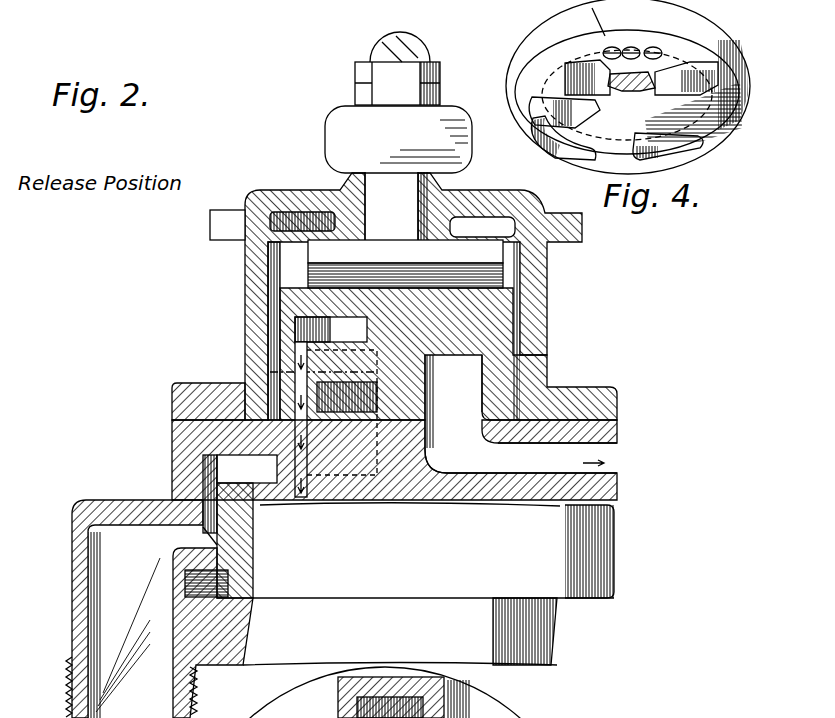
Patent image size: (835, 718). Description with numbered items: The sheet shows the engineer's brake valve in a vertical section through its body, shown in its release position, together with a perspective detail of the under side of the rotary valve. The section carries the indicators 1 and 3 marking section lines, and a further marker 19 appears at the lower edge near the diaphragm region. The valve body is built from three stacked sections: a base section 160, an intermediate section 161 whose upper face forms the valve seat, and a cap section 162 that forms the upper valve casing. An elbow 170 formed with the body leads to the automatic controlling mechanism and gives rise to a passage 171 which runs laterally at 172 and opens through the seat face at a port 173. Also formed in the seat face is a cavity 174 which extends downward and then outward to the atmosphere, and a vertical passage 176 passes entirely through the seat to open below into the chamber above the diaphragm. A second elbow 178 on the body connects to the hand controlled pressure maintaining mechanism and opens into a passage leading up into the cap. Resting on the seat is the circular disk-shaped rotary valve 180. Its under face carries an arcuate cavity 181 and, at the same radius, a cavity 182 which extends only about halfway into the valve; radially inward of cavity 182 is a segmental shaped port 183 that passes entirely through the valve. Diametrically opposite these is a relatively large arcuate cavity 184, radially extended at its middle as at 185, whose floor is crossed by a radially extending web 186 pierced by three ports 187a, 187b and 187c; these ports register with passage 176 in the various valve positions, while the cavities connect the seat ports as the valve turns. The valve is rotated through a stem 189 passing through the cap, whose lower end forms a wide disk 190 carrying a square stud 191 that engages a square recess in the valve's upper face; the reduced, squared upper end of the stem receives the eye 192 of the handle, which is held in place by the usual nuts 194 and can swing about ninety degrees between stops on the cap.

In FIG. 2, the section line 1- 1 is at (485, 700).
In FIG. 2, the section line 3- 3 is at (300, 352).
In FIG. 2, the diaphragm 19 is at (505, 717).
In FIG. 2, the base section 160 is at (614, 585).
In FIG. 2, the intermediate section 161 is at (617, 437).
In FIG. 2, the cap section 162 is at (543, 300).
In FIG. 2, the elbow 170 is at (159, 600).
In FIG. 2, the passage 171 is at (240, 494).
In FIG. 2, the lateral extension of passage 172 is at (333, 497).
In FIG. 2, the port 173 is at (427, 378).
In FIG. 2, the cavity 174 is at (546, 450).
In FIG. 2, the vertical passage 176 is at (280, 372).
In FIG. 2, the elbow 178 is at (357, 709).
In FIG. 2, the rotary valve 180 is at (500, 331).
In FIG. 4, the rotary valve 180 is at (628, 87).
In FIG. 4, the cavity 181 is at (694, 148).
In FIG. 4, the cavity 182 is at (578, 139).
In FIG. 4, the segmental shaped port 183 is at (566, 95).
In FIG. 2, the arcuate cavity 184 is at (331, 329).
In FIG. 4, the arcuate cavity 184 is at (670, 96).
In FIG. 4, the radial extension 185 is at (585, 18).
In FIG. 4, the radially extending web 186 is at (640, 93).
In FIG. 4, the port 187a is at (613, 47).
In FIG. 4, the port 187b is at (634, 47).
In FIG. 2, the port 187c is at (296, 343).
In FIG. 4, the port 187c is at (657, 49).
In FIG. 2, the stem 189 is at (398, 174).
In FIG. 2, the disk 190 is at (405, 251).
In FIG. 2, the square stud 191 is at (405, 275).
In FIG. 2, the eye 192 is at (352, 96).
In FIG. 2, the nuts 194 is at (358, 82).